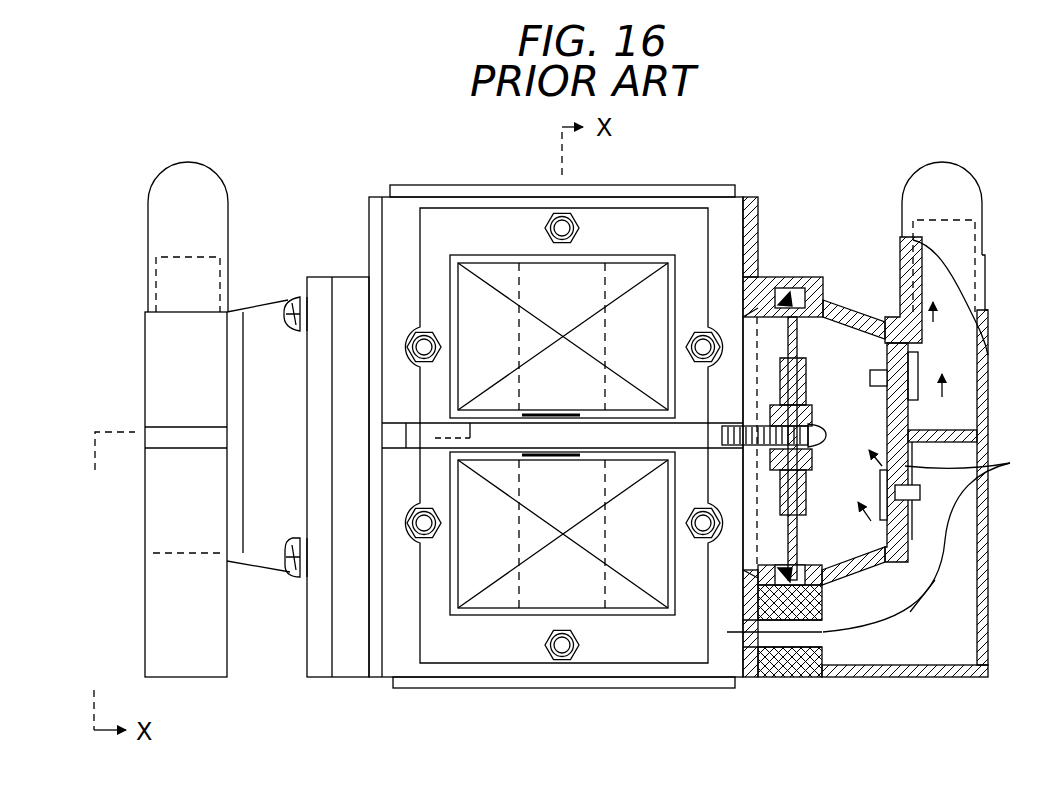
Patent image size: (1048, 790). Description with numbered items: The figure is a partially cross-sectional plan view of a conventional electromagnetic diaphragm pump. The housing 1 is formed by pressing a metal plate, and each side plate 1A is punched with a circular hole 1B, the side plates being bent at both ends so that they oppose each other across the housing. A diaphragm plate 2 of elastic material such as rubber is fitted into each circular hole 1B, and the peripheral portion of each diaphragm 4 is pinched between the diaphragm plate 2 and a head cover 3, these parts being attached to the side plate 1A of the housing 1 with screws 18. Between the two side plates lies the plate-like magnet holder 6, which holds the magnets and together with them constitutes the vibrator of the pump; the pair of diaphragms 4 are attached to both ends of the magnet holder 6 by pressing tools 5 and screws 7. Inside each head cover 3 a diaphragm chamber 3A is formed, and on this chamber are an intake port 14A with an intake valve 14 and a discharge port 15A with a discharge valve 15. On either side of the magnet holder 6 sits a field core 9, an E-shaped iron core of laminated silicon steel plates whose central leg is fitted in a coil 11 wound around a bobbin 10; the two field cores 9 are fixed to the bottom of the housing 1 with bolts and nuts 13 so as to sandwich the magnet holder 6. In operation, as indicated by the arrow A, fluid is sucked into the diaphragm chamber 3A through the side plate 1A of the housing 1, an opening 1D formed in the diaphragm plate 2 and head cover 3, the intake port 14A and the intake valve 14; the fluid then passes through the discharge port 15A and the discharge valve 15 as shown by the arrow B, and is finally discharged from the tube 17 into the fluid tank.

The housing 1 is at (718, 182).
The side plate 1A is at (370, 206).
The circular hole 1B is at (742, 312).
The opening 1D is at (822, 645).
The diaphragm plate 2 is at (345, 287).
The head cover 3 is at (273, 315).
The diaphragm chamber 3A is at (868, 332).
The diaphragm 4 is at (798, 331).
The pressing tool 5 is at (800, 349).
The magnet holder 6 is at (697, 438).
The screw 7 is at (822, 430).
The field core 9 is at (670, 221).
The bobbin 10 is at (633, 414).
The coil 11 is at (653, 292).
The nut 13 is at (547, 228).
The intake valve 14 is at (887, 526).
The intake port 14A is at (935, 540).
The discharge valve 15 is at (913, 340).
The discharge port 15A is at (906, 356).
The tube 17 is at (207, 176).
The screw 18 is at (287, 298).
The arrow A is at (910, 612).
The arrow B is at (937, 316).